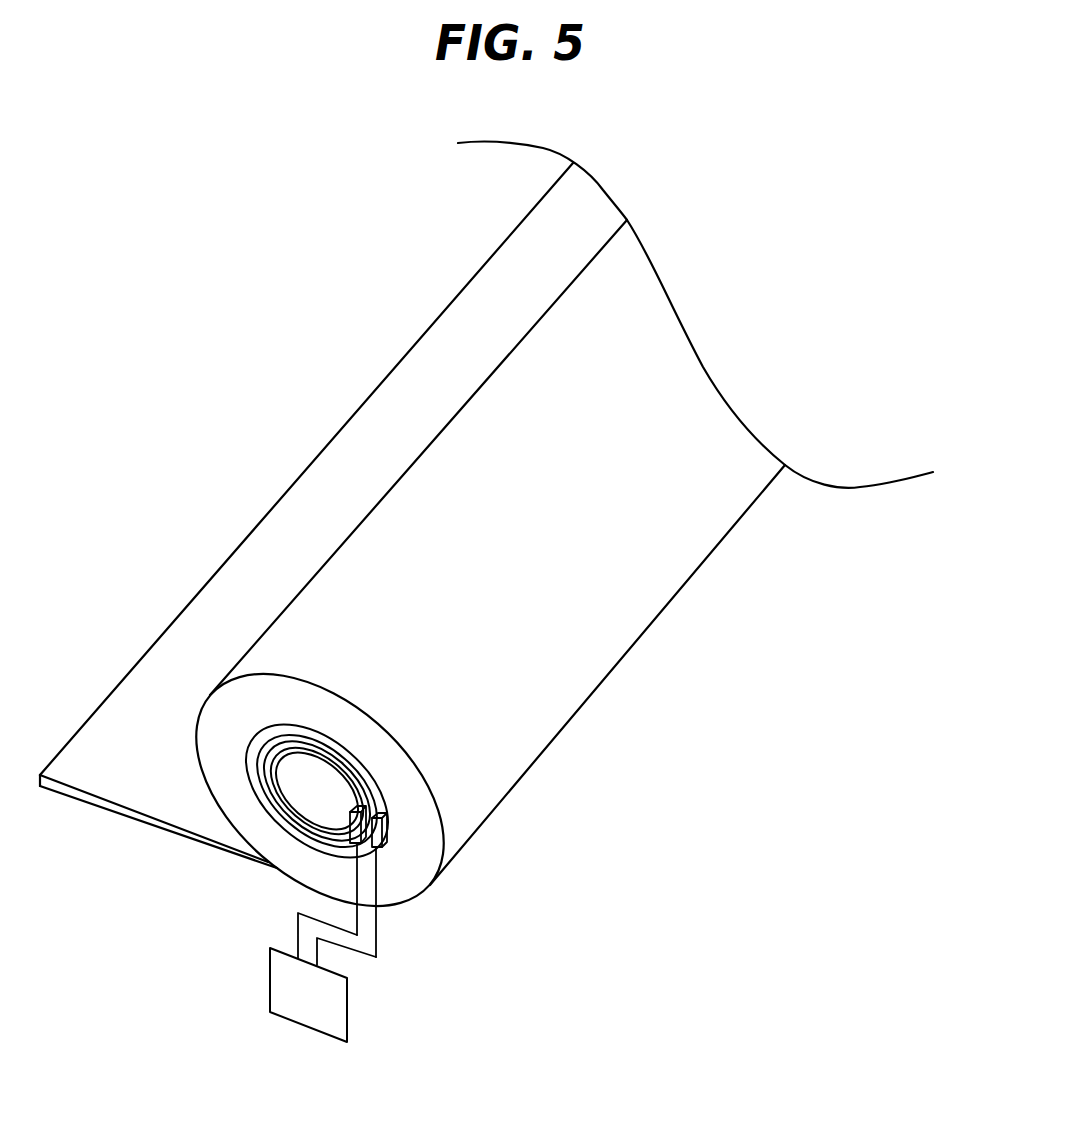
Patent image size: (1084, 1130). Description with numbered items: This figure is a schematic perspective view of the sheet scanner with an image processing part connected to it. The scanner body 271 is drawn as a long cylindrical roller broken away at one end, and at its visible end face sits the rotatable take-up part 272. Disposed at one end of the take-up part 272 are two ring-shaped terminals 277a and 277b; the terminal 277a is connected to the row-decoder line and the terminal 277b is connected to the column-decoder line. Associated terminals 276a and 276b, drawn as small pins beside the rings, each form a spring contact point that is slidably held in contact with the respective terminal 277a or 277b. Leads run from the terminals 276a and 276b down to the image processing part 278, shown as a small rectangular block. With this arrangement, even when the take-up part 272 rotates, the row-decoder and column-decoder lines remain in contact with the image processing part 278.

The photosensitive drum 271 is at (679, 595).
The take-up part 272 is at (307, 803).
The terminal 276a is at (388, 828).
The terminal 276b is at (348, 802).
The terminal 277a is at (275, 730).
The terminal 277b is at (277, 772).
The image processing part 278 is at (347, 1010).